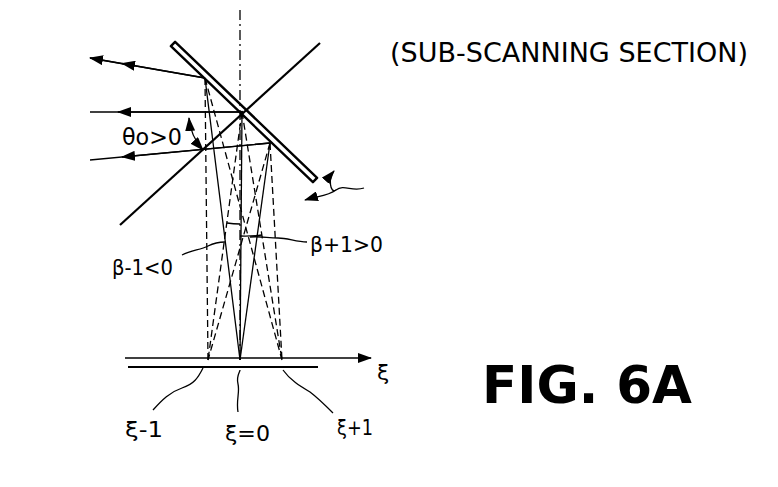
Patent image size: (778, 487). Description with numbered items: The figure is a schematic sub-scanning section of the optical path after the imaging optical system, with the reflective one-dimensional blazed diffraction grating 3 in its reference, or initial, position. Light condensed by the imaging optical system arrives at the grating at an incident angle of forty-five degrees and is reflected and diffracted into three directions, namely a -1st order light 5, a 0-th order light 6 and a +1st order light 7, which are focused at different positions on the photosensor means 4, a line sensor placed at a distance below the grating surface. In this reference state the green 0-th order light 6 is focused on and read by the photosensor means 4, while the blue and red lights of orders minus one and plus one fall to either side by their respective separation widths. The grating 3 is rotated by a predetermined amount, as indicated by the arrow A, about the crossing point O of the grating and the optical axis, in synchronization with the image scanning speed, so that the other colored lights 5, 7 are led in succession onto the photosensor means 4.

The reflective one-dimensional blazed diffraction grating 3 is at (296, 148).
The photosensor means 4 is at (262, 364).
The -1st order light 5 is at (218, 280).
The 0-th order light 6 is at (238, 302).
The +1st order light 7 is at (273, 293).
The crossing point O 0 is at (247, 108).
The arrow indicating rotation A is at (344, 184).